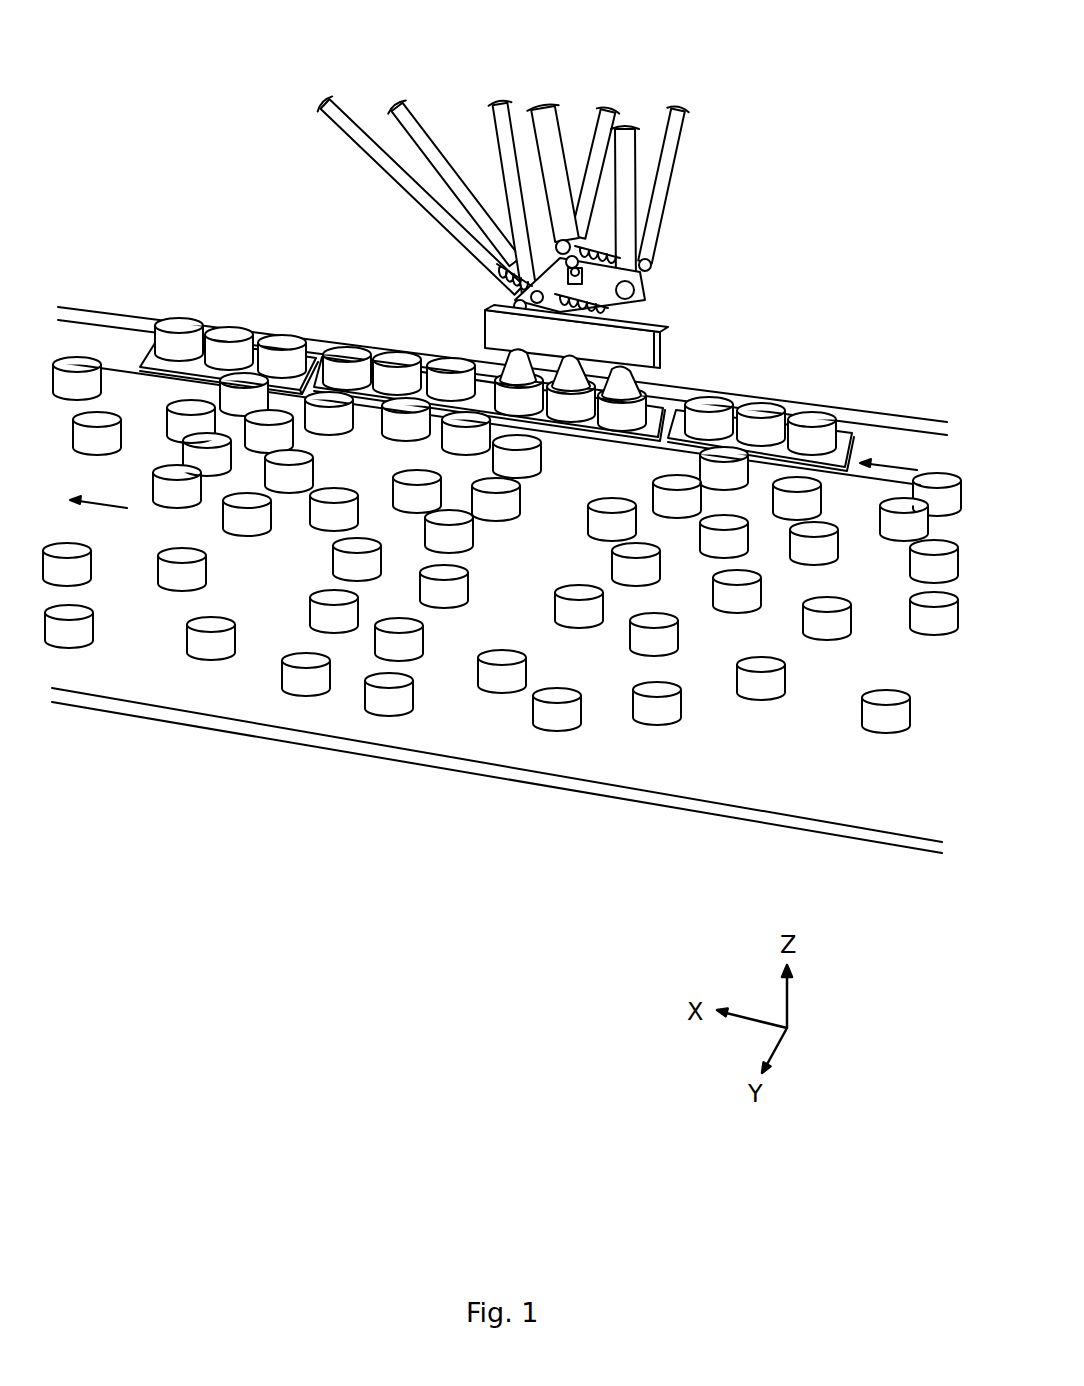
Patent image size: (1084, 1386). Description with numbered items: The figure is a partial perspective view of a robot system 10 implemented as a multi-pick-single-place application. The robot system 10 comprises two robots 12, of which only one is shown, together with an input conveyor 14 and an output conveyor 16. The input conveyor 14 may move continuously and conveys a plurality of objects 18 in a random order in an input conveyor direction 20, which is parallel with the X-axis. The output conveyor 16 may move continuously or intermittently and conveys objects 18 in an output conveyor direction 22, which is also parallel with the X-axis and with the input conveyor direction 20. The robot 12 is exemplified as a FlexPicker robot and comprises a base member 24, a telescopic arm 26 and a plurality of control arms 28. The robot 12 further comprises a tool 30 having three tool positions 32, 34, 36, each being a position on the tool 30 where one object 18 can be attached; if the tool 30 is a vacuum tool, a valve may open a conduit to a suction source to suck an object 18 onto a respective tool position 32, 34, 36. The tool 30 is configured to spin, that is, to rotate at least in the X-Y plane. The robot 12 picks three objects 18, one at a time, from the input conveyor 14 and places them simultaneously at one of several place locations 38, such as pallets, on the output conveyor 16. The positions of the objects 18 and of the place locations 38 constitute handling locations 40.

The robot system 10 is at (176, 86).
The robot 12 is at (688, 70).
The input conveyor 14 is at (782, 783).
The output conveyor 16 is at (93, 347).
The object 18 is at (502, 523).
The input conveyor direction 20 is at (98, 489).
The output conveyor direction 22 is at (888, 451).
The base member 24 is at (593, 280).
The telescopic arm 26 is at (543, 117).
The control arm 28 is at (432, 150).
The tool 30 is at (564, 379).
The tool position 32 is at (623, 380).
The tool position 34 is at (570, 373).
The tool position 36 is at (505, 360).
The place location 38 is at (317, 360).
The handling location 40 is at (557, 713).